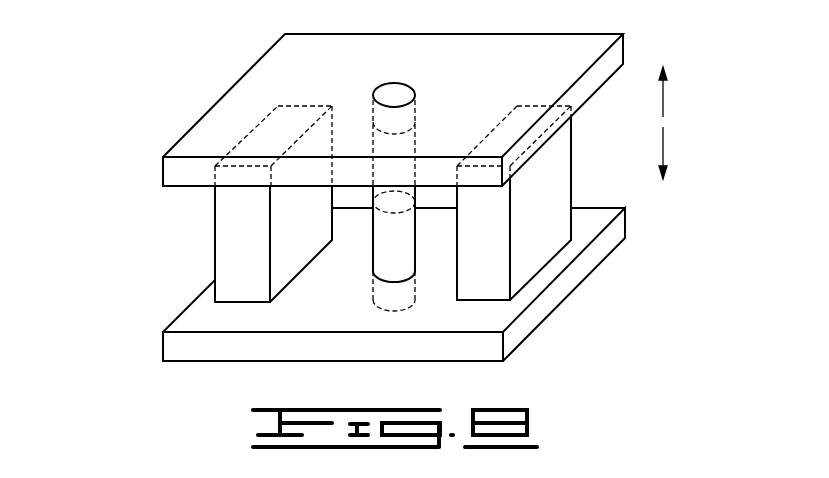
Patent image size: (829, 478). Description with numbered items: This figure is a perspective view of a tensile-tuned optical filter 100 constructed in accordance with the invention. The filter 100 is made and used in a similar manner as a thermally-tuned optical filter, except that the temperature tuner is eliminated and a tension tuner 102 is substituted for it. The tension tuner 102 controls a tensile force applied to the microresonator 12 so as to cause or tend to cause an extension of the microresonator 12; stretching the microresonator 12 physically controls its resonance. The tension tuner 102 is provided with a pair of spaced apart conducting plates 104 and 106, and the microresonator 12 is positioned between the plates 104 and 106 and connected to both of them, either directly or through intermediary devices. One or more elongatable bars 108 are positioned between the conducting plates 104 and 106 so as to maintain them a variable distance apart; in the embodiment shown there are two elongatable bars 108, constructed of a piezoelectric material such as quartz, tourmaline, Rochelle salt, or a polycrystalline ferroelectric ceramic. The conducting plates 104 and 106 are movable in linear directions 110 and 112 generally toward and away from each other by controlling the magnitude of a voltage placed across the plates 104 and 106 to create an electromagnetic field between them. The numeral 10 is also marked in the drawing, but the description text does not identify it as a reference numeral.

The alignment pin 10 is at (432, 186).
The microresonator 12 is at (373, 272).
The tensile-tuned optical filter 100 is at (382, 212).
The tension tuner 102 is at (368, 284).
The conducting plate 104 is at (617, 55).
The conducting plate 106 is at (583, 267).
The elongatable bar 108 is at (235, 245).
The linear direction 110 is at (663, 101).
The linear direction 112 is at (663, 144).